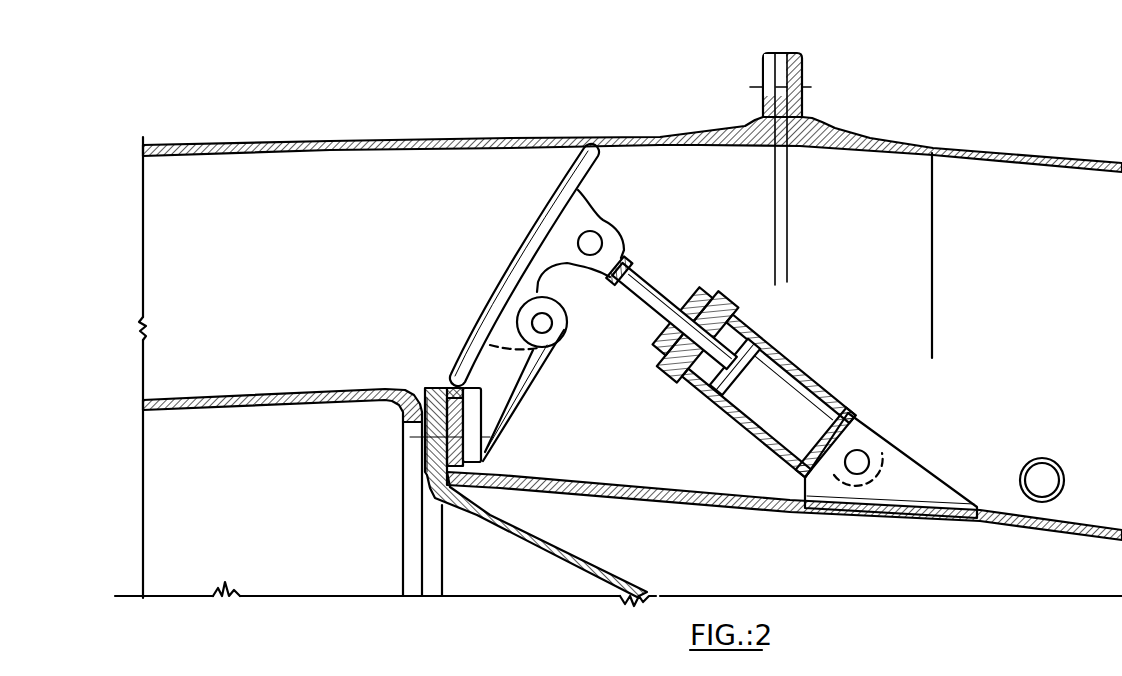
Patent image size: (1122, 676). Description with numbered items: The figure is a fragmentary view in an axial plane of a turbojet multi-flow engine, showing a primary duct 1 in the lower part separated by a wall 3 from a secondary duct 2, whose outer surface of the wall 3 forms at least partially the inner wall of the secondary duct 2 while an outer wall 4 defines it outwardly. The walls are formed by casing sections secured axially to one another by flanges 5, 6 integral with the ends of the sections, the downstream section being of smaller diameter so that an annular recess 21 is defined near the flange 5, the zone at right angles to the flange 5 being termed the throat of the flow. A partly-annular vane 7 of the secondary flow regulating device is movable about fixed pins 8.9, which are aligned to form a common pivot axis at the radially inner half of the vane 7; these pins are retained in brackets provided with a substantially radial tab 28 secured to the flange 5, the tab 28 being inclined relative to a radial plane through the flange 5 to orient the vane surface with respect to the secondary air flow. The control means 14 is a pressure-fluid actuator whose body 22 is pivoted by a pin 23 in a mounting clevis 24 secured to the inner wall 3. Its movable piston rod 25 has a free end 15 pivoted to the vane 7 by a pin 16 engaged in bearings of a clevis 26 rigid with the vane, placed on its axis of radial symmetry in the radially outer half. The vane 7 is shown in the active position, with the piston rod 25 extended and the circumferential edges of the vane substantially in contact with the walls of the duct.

The primary duct 1 is at (312, 530).
The secondary duct 2 is at (326, 267).
The wall 3 is at (237, 402).
The outer wall 4 is at (327, 140).
The flange 5 is at (430, 460).
The flange 6 is at (797, 46).
The vane 7 is at (492, 308).
The fixed pins 8.9 is at (553, 323).
The control means 14 is at (746, 350).
The free end 15 is at (628, 256).
The pin 16 is at (595, 239).
The annular recess 21 is at (656, 463).
The body 22 is at (820, 381).
The pin 23 is at (862, 457).
The mounting clevis 24 is at (913, 490).
The piston rod 25 is at (660, 313).
The clevis 26 is at (560, 246).
The radial tab 28 is at (510, 385).